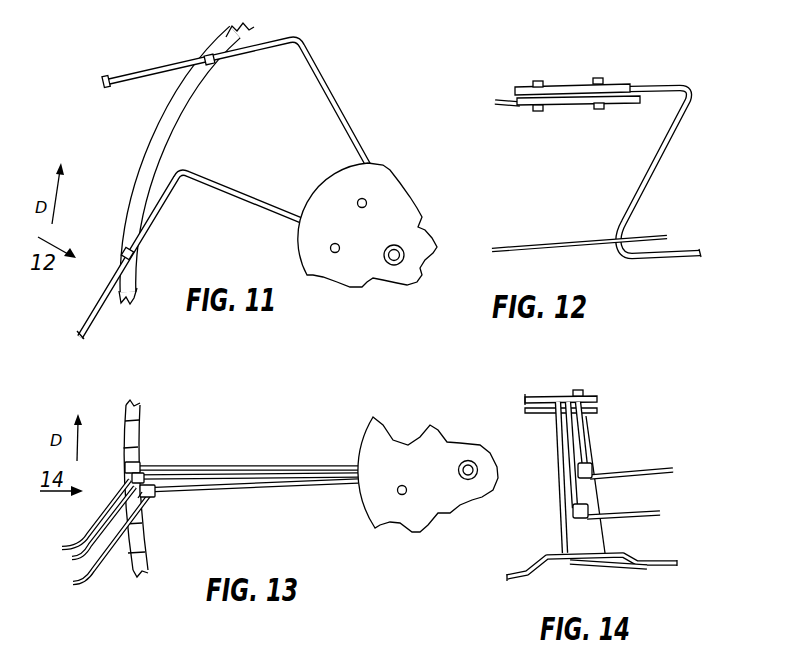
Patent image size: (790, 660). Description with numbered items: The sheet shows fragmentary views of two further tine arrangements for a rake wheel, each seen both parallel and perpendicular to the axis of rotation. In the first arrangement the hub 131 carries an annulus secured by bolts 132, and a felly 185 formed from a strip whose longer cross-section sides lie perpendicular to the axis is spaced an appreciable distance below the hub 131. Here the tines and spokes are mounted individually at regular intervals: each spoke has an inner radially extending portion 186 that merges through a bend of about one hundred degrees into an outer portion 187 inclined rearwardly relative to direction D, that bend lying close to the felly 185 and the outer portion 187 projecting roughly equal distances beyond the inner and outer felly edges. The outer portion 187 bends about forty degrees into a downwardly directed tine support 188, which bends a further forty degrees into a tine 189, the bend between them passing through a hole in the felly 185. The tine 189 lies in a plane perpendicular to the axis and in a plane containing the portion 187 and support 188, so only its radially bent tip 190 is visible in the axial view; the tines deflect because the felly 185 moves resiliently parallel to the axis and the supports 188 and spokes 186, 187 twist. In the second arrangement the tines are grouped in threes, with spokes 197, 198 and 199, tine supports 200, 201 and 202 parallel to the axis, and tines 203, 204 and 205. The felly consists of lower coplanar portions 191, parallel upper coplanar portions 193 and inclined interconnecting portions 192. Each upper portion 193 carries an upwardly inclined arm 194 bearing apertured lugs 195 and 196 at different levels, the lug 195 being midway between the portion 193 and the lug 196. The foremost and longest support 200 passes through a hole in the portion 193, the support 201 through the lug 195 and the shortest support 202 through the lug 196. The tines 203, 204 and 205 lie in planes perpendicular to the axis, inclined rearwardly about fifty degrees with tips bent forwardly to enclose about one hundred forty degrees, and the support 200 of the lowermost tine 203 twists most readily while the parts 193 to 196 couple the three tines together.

In FIG. 11, the hub 131 is at (371, 288).
In FIG. 12, the hub 131 is at (538, 86).
In FIG. 13, the hub 131 is at (385, 432).
In FIG. 14, the hub 131 is at (535, 396).
In FIG. 11, the bolts 132 is at (359, 208).
In FIG. 12, the bolts 132 is at (597, 78).
In FIG. 13, the bolts 132 is at (404, 485).
In FIG. 14, the bolts 132 is at (580, 390).
In FIG. 11, the felly 185 is at (178, 108).
In FIG. 12, the felly 185 is at (545, 243).
In FIG. 11, the inner radially extending portion 186 is at (331, 91).
In FIG. 12, the inner radially extending portion 186 is at (496, 101).
In FIG. 11, the outer portion 187 is at (236, 56).
In FIG. 12, the tine support 188 is at (655, 164).
In FIG. 12, the tine 189 is at (655, 258).
In FIG. 11, the free end or tip 190 is at (109, 77).
In FIG. 12, the free end or tip 190 is at (705, 255).
In FIG. 13, the lower coplanar portions 191 is at (136, 406).
In FIG. 14, the lower coplanar portions 191 is at (511, 570).
In FIG. 13, the interconnecting portions 192 is at (140, 437).
In FIG. 14, the interconnecting portions 192 is at (532, 566).
In FIG. 13, the upper coplanar portions 193 is at (143, 461).
In FIG. 14, the upper coplanar portions 193 is at (593, 553).
In FIG. 13, the upwardly inclined arm 194 is at (156, 492).
In FIG. 14, the upwardly inclined arm 194 is at (589, 488).
In FIG. 13, the apertured lug 195 is at (125, 468).
In FIG. 14, the apertured lug 195 is at (593, 506).
In FIG. 13, the apertured lug 196 is at (146, 504).
In FIG. 14, the apertured lug 196 is at (593, 464).
In FIG. 13, the spoke 197 is at (251, 466).
In FIG. 13, the spoke 198 is at (291, 467).
In FIG. 13, the spoke 199 is at (260, 489).
In FIG. 14, the tine support 200 is at (559, 444).
In FIG. 14, the tine support 201 is at (568, 420).
In FIG. 14, the tine support 202 is at (589, 424).
In FIG. 13, the tine 203 is at (93, 505).
In FIG. 14, the tine 203 is at (608, 568).
In FIG. 13, the tine 204 is at (78, 536).
In FIG. 14, the tine 204 is at (659, 513).
In FIG. 13, the tine 205 is at (82, 577).
In FIG. 14, the tine 205 is at (669, 469).